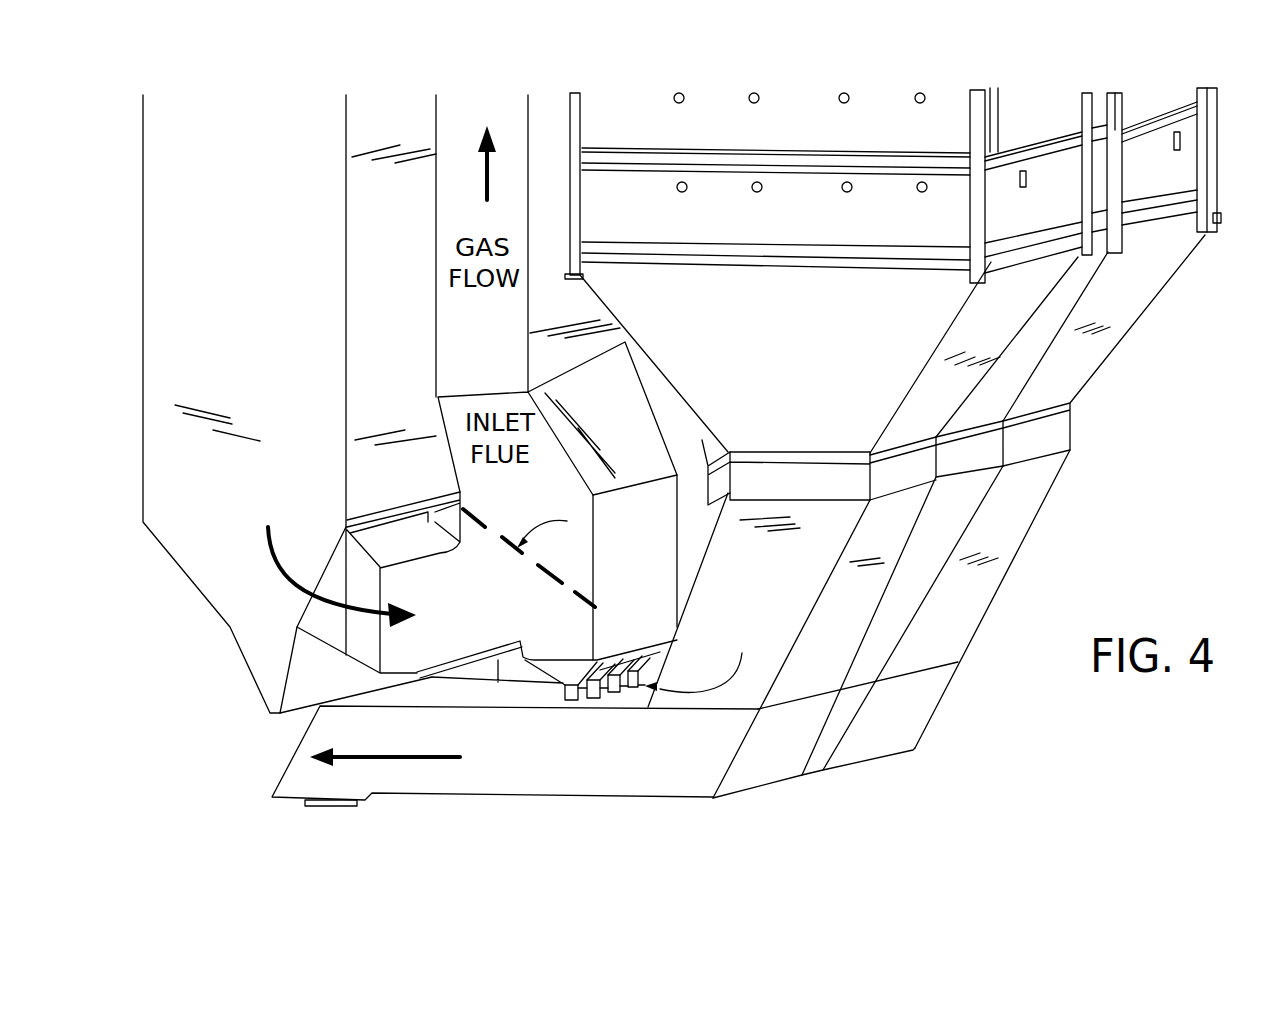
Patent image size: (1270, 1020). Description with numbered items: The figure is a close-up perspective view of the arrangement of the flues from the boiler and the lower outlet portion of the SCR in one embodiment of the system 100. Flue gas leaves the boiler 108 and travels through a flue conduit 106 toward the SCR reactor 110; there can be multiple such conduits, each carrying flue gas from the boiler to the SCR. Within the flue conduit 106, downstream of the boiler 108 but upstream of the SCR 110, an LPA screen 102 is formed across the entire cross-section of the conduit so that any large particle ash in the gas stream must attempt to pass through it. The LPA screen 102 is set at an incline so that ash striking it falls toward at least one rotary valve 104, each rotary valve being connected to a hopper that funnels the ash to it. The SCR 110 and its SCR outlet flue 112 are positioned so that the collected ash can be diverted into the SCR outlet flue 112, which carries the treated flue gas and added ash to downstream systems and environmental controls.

The system 100 is at (322, 104).
The LPA screen 102 is at (484, 527).
The rotary valve 104 is at (607, 690).
The flue conduit 106 is at (465, 607).
The boiler 108 is at (270, 276).
The SCR reactor 110 is at (805, 141).
The SCR outlet flue 112 is at (560, 761).